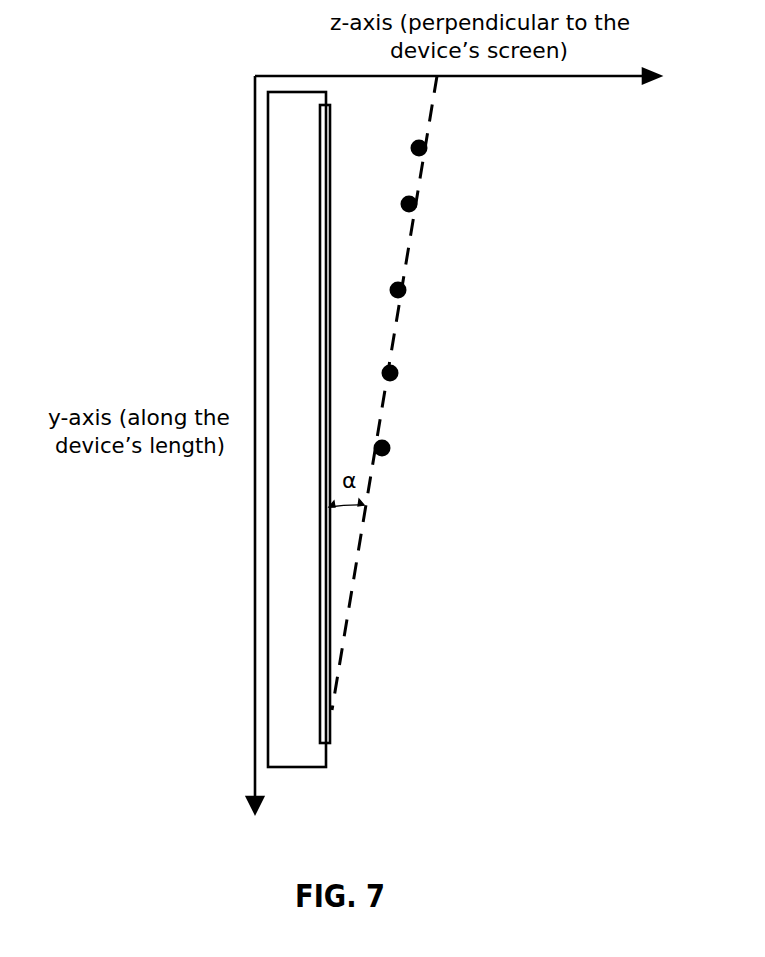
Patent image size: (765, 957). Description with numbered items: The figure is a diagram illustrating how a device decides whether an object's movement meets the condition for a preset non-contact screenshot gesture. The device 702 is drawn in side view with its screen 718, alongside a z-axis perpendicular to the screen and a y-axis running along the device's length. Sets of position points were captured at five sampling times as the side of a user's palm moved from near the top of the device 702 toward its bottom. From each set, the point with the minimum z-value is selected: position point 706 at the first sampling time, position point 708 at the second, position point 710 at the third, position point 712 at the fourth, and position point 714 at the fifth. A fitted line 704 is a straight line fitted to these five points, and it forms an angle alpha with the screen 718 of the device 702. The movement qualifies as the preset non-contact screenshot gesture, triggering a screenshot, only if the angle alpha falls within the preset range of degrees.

The device 702 is at (280, 151).
The fitted line 704 is at (430, 118).
The position point 706 is at (416, 146).
The position point 708 is at (408, 203).
The position point 710 is at (401, 289).
The position point 712 is at (394, 372).
The position point 714 is at (386, 447).
The screen 718 is at (327, 222).